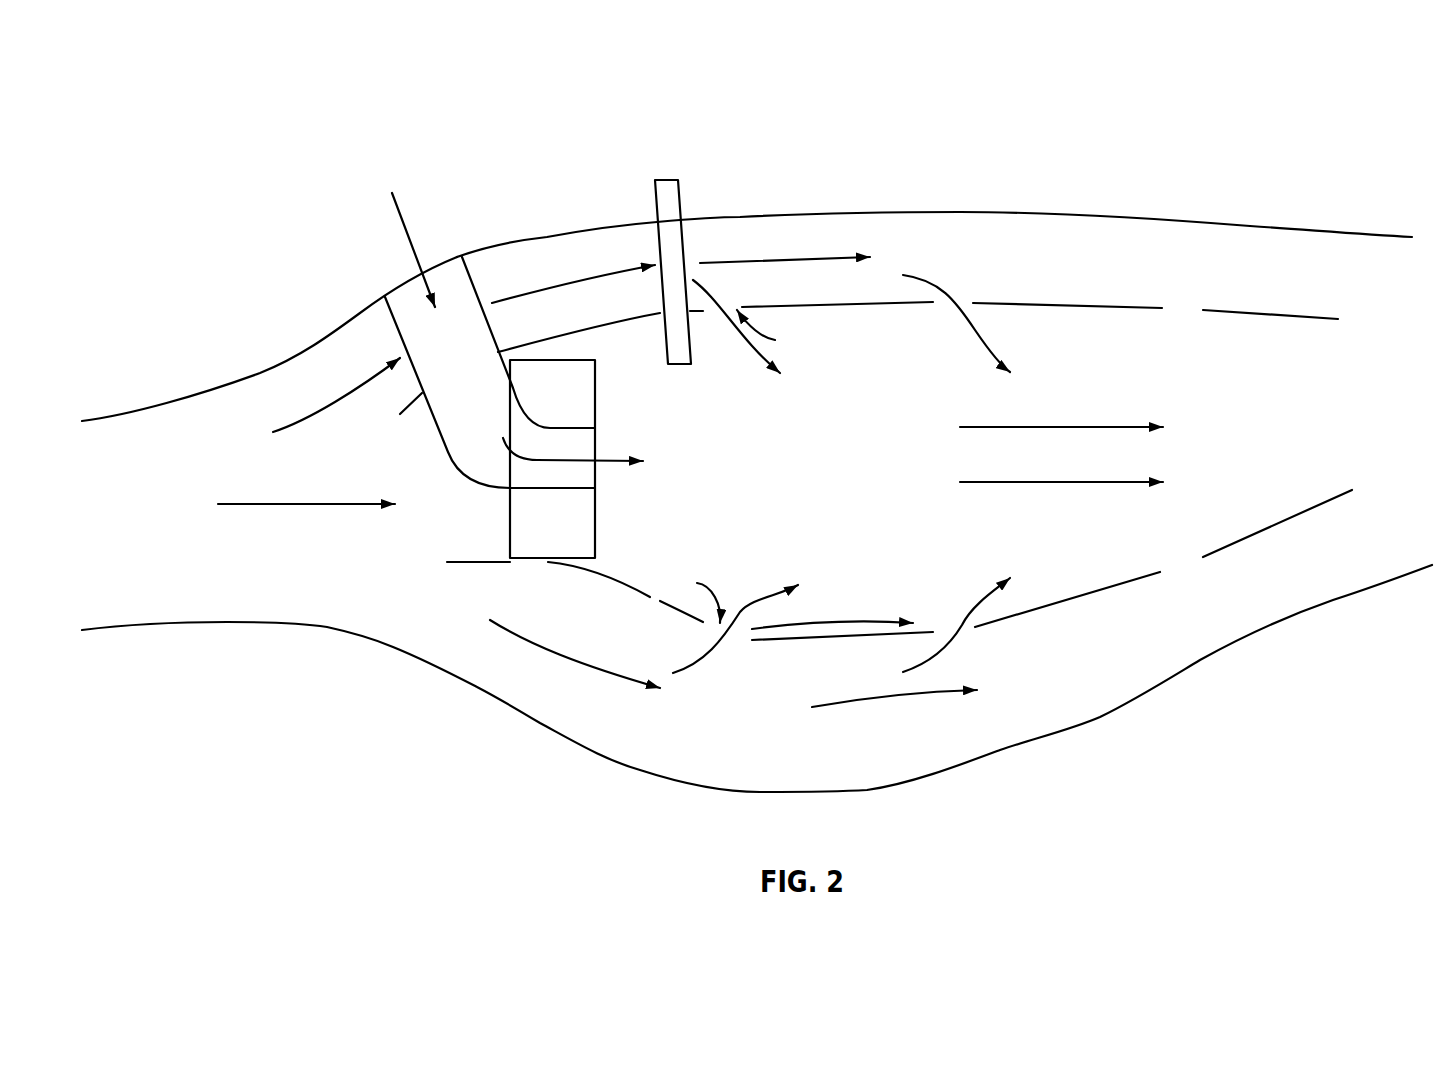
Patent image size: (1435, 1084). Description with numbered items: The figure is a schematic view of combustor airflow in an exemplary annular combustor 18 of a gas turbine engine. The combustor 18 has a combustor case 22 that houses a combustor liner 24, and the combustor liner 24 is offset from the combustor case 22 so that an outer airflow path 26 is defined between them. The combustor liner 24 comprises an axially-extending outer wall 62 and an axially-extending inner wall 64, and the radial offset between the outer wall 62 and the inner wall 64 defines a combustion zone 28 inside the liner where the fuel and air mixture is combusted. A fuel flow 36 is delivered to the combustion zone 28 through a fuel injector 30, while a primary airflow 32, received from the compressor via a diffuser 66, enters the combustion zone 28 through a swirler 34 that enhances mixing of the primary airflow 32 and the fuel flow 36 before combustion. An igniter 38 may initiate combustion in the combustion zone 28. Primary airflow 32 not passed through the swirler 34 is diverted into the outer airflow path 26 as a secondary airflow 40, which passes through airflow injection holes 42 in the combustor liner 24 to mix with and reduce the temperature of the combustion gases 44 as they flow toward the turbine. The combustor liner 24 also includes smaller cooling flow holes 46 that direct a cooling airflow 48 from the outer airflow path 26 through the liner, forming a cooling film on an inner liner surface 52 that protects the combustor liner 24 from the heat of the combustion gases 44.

The combustor 18 is at (152, 163).
The combustor case 22 is at (853, 213).
The combustor liner 24 is at (1105, 303).
The outer airflow path 26 is at (978, 271).
The combustion zone 28 is at (818, 481).
The fuel injector 30 is at (402, 338).
The primary airflow 32 is at (260, 503).
The swirler 34 is at (542, 360).
The fuel flow 36 is at (403, 223).
The igniter 38 is at (668, 180).
The secondary airflow 40 is at (787, 257).
The airflow injection holes 42 is at (745, 451).
The combustion gases 44 is at (1063, 427).
The cooling flow holes 46 is at (650, 600).
The cooling airflow 48 is at (835, 627).
The inner liner surface 52 is at (1102, 590).
The outer wall 62 is at (1057, 303).
The inner wall 64 is at (870, 643).
The diffuser 66 is at (180, 430).